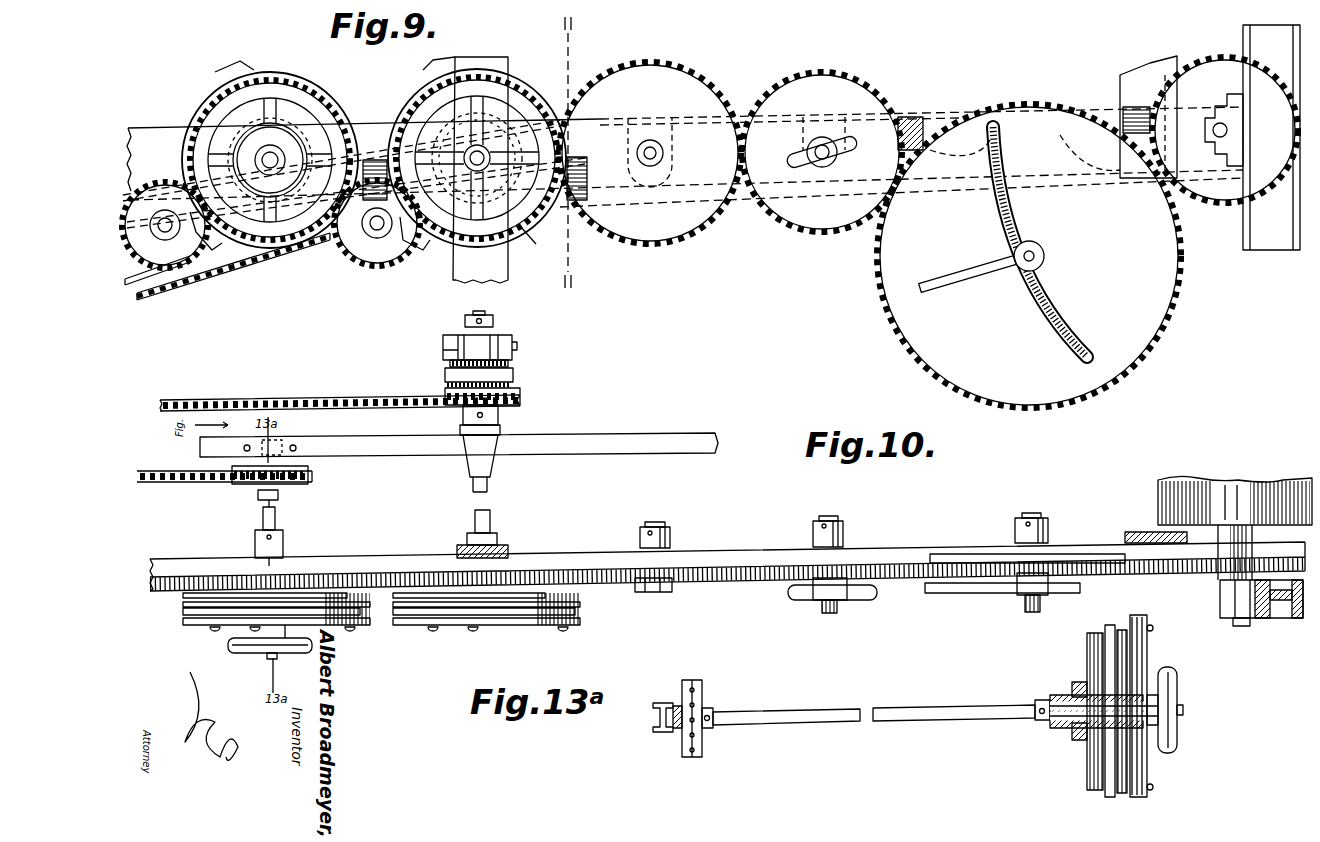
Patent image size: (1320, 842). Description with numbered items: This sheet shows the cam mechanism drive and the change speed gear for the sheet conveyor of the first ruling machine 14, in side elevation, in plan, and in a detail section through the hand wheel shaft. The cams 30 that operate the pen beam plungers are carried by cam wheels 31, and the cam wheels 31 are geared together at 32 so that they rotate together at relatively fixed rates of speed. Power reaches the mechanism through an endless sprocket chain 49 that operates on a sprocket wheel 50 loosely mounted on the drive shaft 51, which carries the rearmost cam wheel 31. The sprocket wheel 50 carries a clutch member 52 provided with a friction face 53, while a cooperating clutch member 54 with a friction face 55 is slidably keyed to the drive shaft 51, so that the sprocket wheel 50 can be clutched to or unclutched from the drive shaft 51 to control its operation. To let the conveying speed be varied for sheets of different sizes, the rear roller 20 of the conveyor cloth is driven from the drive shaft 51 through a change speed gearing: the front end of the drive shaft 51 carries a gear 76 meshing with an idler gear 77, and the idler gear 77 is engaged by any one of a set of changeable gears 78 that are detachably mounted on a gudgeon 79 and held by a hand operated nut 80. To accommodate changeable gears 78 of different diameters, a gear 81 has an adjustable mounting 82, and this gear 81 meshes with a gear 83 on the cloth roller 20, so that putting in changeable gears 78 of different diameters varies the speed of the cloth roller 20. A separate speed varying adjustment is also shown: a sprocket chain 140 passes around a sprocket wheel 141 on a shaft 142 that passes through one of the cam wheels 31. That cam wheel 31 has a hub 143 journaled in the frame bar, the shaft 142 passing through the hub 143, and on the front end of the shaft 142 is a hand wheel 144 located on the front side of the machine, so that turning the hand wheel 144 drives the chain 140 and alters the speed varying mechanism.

In FIG. 9, the first ruling machine 14 is at (924, 104).
In FIG. 10, the first ruling machine 14 is at (752, 546).
In FIG. 10, the rear roller 20 is at (1250, 484).
In FIG. 9, the cam 30 is at (245, 66).
In FIG. 9, the cam wheel 31 is at (318, 108).
In FIG. 10, the cam wheel 31 is at (323, 577).
In FIG. 13a, the cam wheel 31 is at (1143, 654).
In FIG. 9, the gearing 32 is at (175, 263).
In FIG. 9, the endless sprocket chain 49 is at (236, 278).
In FIG. 10, the endless sprocket chain 49 is at (232, 402).
In FIG. 9, the sprocket wheel 50 is at (466, 248).
In FIG. 10, the sprocket wheel 50 is at (522, 397).
In FIG. 9, the drive shaft 51 is at (463, 166).
In FIG. 10, the drive shaft 51 is at (488, 520).
In FIG. 10, the clutch member 52 is at (513, 375).
In FIG. 10, the friction face 53 is at (448, 363).
In FIG. 10, the clutch member 54 is at (495, 338).
In FIG. 10, the friction face 55 is at (446, 347).
In FIG. 9, the gear 76 is at (541, 247).
In FIG. 10, the gear 76 is at (527, 578).
In FIG. 9, the idler gear 77 is at (682, 232).
In FIG. 10, the idler gear 77 is at (702, 581).
In FIG. 9, the changeable gear 78 is at (847, 220).
In FIG. 10, the changeable gear 78 is at (768, 583).
In FIG. 9, the gudgeon 79 is at (817, 160).
In FIG. 10, the gudgeon 79 is at (831, 614).
In FIG. 9, the hand operated nut 80 is at (790, 163).
In FIG. 10, the hand operated nut 80 is at (860, 596).
In FIG. 9, the gear 81 is at (1167, 305).
In FIG. 10, the gear 81 is at (1090, 574).
In FIG. 9, the adjustable mounting 82 is at (1044, 247).
In FIG. 10, the adjustable mounting 82 is at (1033, 612).
In FIG. 9, the gear 83 is at (1220, 193).
In FIG. 10, the gear 83 is at (1183, 574).
In FIG. 10, the sprocket chain 140 is at (195, 483).
In FIG. 10, the sprocket wheel 141 is at (297, 487).
In FIG. 13a, the sprocket wheel 141 is at (703, 684).
In FIG. 10, the shaft 142 is at (277, 494).
In FIG. 13a, the shaft 142 is at (800, 701).
In FIG. 13a, the hub 143 is at (1058, 697).
In FIG. 10, the hand wheel 144 is at (245, 654).
In FIG. 13a, the hand wheel 144 is at (1178, 681).